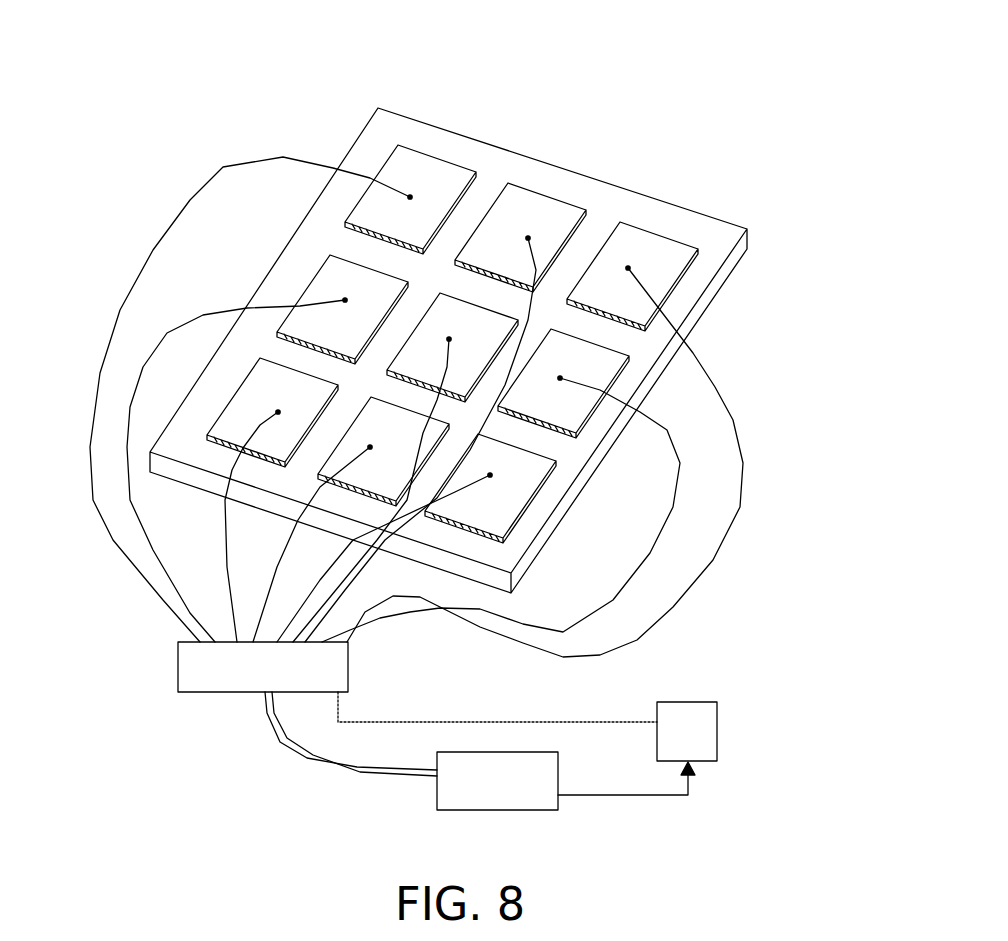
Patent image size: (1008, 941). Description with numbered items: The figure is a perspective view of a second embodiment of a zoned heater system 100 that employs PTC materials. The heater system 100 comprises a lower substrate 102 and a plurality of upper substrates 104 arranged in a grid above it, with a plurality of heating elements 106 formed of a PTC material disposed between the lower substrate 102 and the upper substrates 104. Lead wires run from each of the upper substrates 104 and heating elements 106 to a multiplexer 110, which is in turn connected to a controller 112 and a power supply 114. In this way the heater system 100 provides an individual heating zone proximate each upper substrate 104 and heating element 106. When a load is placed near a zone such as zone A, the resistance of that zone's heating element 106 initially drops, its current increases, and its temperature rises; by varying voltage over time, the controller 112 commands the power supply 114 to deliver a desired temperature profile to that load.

The heater system 100 is at (690, 88).
The lower substrate 102 is at (715, 238).
The upper substrates 104 is at (628, 237).
The heating elements 106 is at (478, 178).
The multiplexer 110 is at (178, 677).
The controller 112 is at (437, 795).
The power supply 114 is at (718, 725).